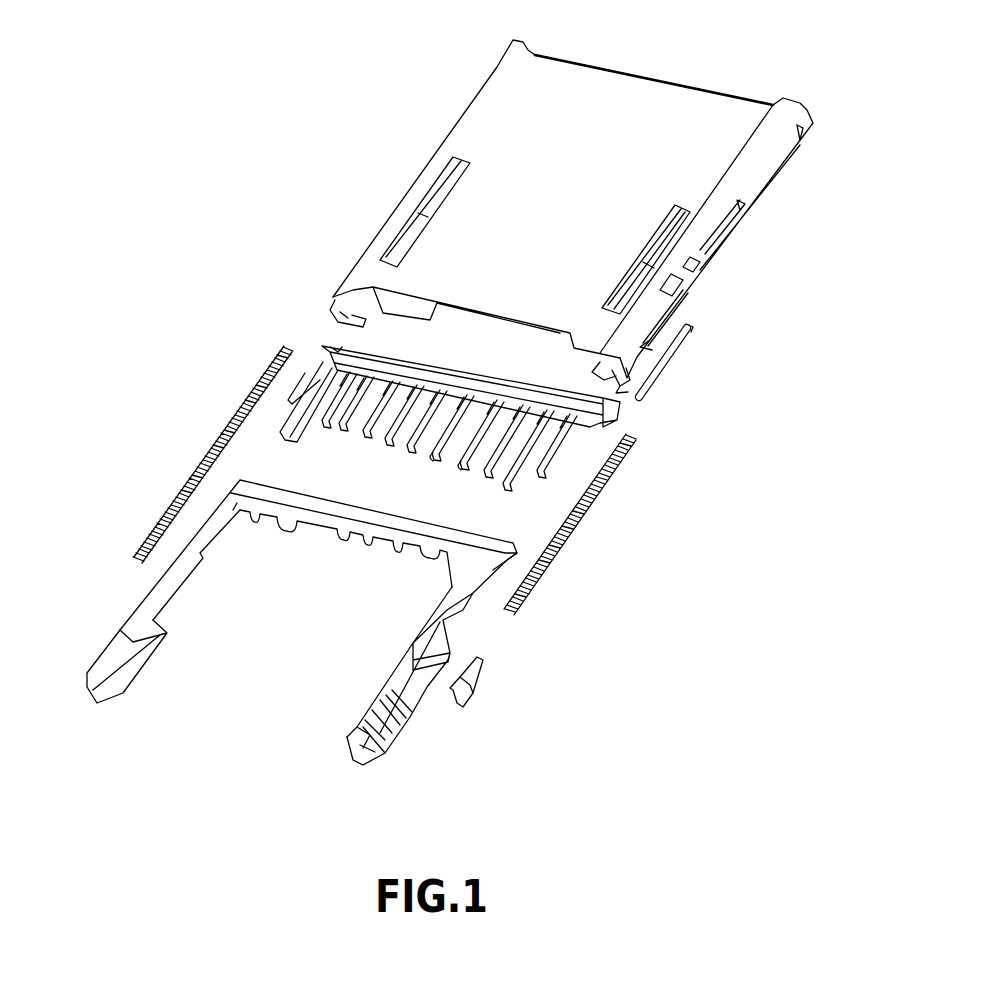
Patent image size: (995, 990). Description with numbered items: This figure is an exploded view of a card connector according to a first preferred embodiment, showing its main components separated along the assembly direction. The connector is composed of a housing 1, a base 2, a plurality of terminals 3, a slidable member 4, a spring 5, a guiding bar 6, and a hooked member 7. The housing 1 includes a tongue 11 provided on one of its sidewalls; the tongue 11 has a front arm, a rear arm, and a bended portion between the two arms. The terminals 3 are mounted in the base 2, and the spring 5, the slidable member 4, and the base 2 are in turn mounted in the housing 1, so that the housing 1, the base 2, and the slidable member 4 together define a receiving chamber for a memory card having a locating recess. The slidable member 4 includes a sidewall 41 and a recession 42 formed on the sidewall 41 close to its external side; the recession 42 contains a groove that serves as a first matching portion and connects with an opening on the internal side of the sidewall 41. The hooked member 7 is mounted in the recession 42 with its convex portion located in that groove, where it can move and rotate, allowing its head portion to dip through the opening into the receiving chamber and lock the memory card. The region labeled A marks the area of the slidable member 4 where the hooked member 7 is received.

The housing 1 is at (478, 130).
The tongue 11 is at (697, 270).
The base 2 is at (327, 333).
The terminals 3 is at (522, 480).
The slidable member 4 is at (122, 612).
The sidewall 41 is at (360, 727).
The recession 42 is at (453, 628).
The spring 5 is at (180, 467).
The guiding bar 6 is at (663, 372).
The hooked member 7 is at (483, 698).
The detail region A is at (420, 697).